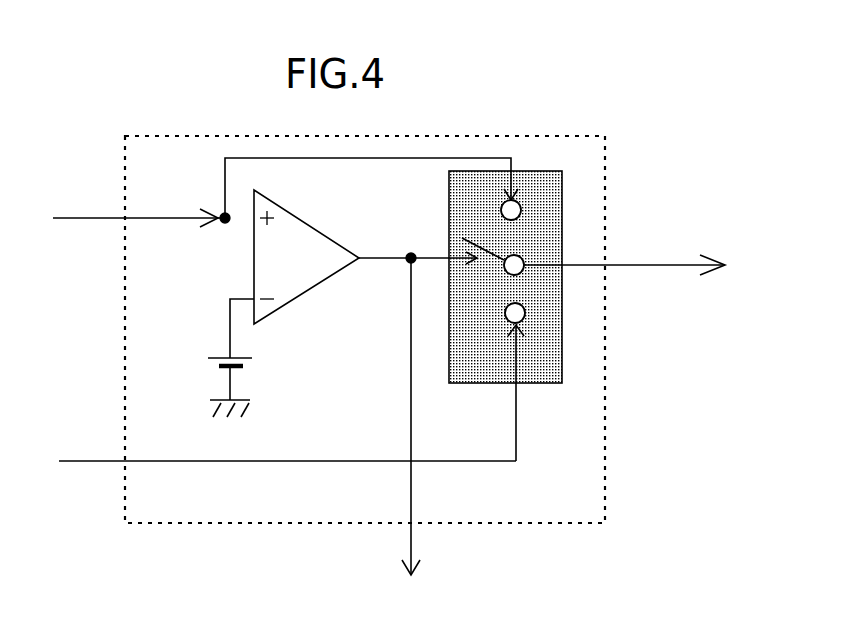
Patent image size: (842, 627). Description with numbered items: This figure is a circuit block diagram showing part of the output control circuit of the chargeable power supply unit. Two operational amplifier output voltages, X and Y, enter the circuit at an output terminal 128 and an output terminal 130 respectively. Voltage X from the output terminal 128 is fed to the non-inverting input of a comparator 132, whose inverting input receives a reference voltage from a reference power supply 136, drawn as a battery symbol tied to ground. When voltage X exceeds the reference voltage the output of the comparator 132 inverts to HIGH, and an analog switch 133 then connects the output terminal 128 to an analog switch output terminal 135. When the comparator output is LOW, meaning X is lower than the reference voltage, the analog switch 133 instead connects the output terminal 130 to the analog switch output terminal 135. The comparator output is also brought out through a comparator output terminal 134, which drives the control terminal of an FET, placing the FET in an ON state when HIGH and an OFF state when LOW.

The output terminal 128 is at (105, 207).
The output terminal 130 is at (115, 445).
The comparator 132 is at (302, 305).
The analog switch 133 is at (443, 237).
The comparator output terminal 134 is at (423, 537).
The analog switch output terminal 135 is at (622, 258).
The reference power supply 136 is at (263, 363).